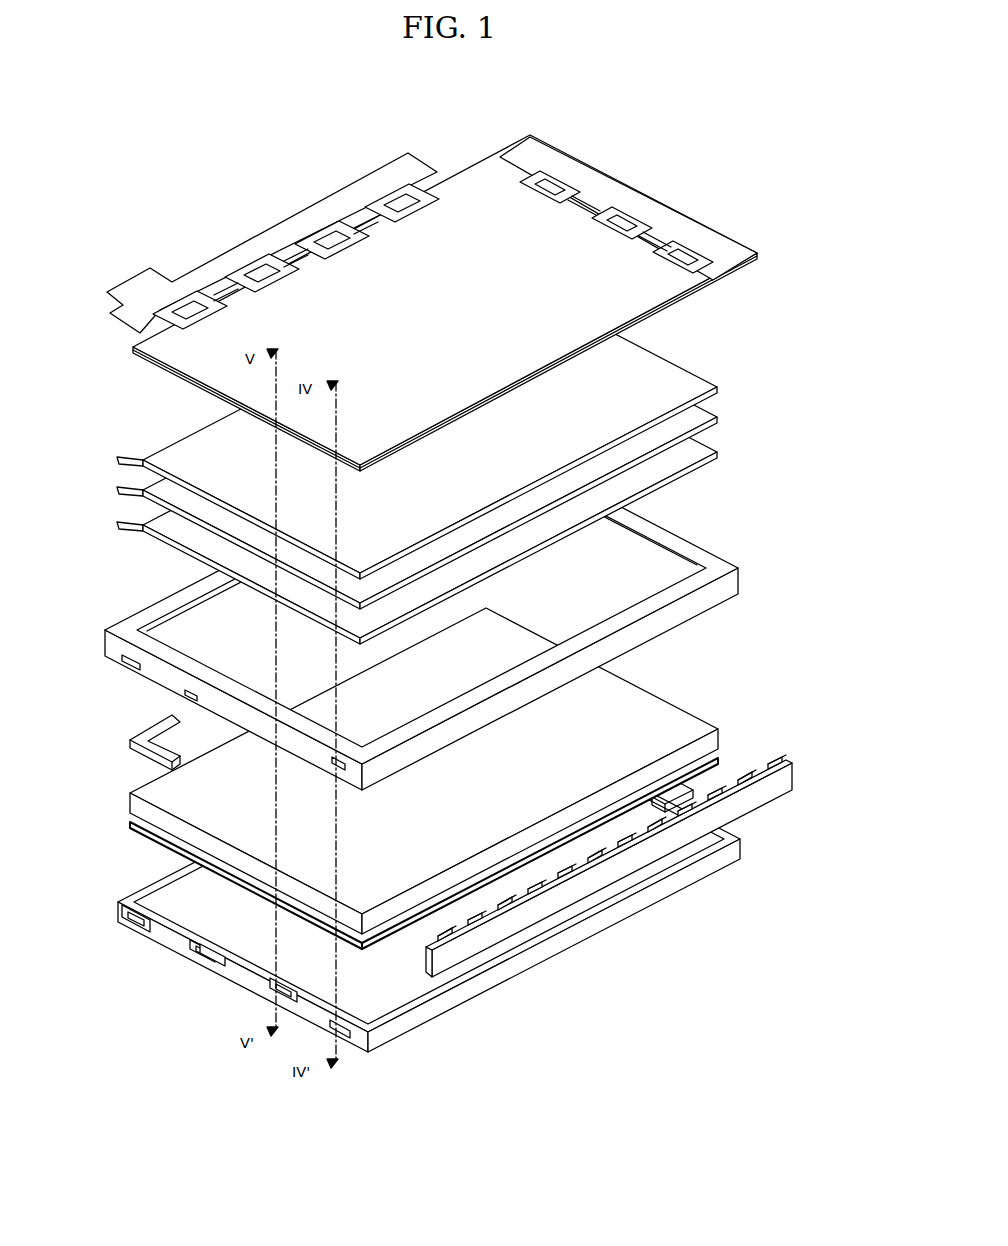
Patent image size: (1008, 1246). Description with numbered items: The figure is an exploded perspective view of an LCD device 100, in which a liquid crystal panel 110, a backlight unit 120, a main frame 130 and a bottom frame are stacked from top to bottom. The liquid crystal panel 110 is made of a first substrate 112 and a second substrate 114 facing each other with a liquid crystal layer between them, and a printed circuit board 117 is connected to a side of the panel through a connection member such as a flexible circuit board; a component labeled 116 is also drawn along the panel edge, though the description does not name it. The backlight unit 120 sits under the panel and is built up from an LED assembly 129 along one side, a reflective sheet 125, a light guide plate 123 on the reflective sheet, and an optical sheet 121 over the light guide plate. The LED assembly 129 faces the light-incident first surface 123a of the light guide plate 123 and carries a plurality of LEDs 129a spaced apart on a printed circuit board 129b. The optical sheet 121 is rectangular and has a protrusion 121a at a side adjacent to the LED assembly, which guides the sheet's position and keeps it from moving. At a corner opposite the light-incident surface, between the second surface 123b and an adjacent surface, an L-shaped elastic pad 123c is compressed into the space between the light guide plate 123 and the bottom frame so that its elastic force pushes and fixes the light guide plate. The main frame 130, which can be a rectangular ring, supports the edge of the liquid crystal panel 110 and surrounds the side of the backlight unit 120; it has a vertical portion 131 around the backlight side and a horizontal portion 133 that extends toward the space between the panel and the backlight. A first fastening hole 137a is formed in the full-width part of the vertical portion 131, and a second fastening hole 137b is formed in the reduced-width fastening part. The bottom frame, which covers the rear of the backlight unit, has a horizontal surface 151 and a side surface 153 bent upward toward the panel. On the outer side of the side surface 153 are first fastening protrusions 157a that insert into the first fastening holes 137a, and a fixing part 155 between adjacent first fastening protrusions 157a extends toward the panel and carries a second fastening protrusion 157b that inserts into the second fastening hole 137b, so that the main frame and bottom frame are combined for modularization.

The LCD device 100 is at (772, 145).
The liquid crystal panel 110 is at (800, 212).
The first substrate 112 is at (723, 267).
The second substrate 114 is at (703, 253).
The driver integrated circuits 116 is at (488, 162).
The printed circuit board 117 is at (222, 262).
The backlight unit 120 is at (793, 733).
The optical sheet 121 is at (728, 383).
The protrusion 121a is at (130, 457).
The light guide plate 123 is at (714, 686).
The first surface 123a is at (722, 735).
The second surface 123b is at (128, 798).
The pad 123c is at (128, 745).
The reflective sheet 125 is at (717, 755).
The LED assembly 129 is at (866, 746).
The LEDs 129a is at (790, 762).
The printed circuit board 129b is at (792, 782).
The main frame 130 is at (62, 616).
The vertical portion 131 is at (103, 631).
The horizontal portion 133 is at (137, 628).
The first fastening hole 137a is at (128, 666).
The second fastening hole 137b is at (188, 695).
The horizontal surface 151 is at (118, 902).
The side surface 153 is at (115, 912).
The fixing part 155 is at (219, 975).
The first fastening protrusion 157a is at (128, 930).
The second fastening protrusion 157b is at (187, 965).